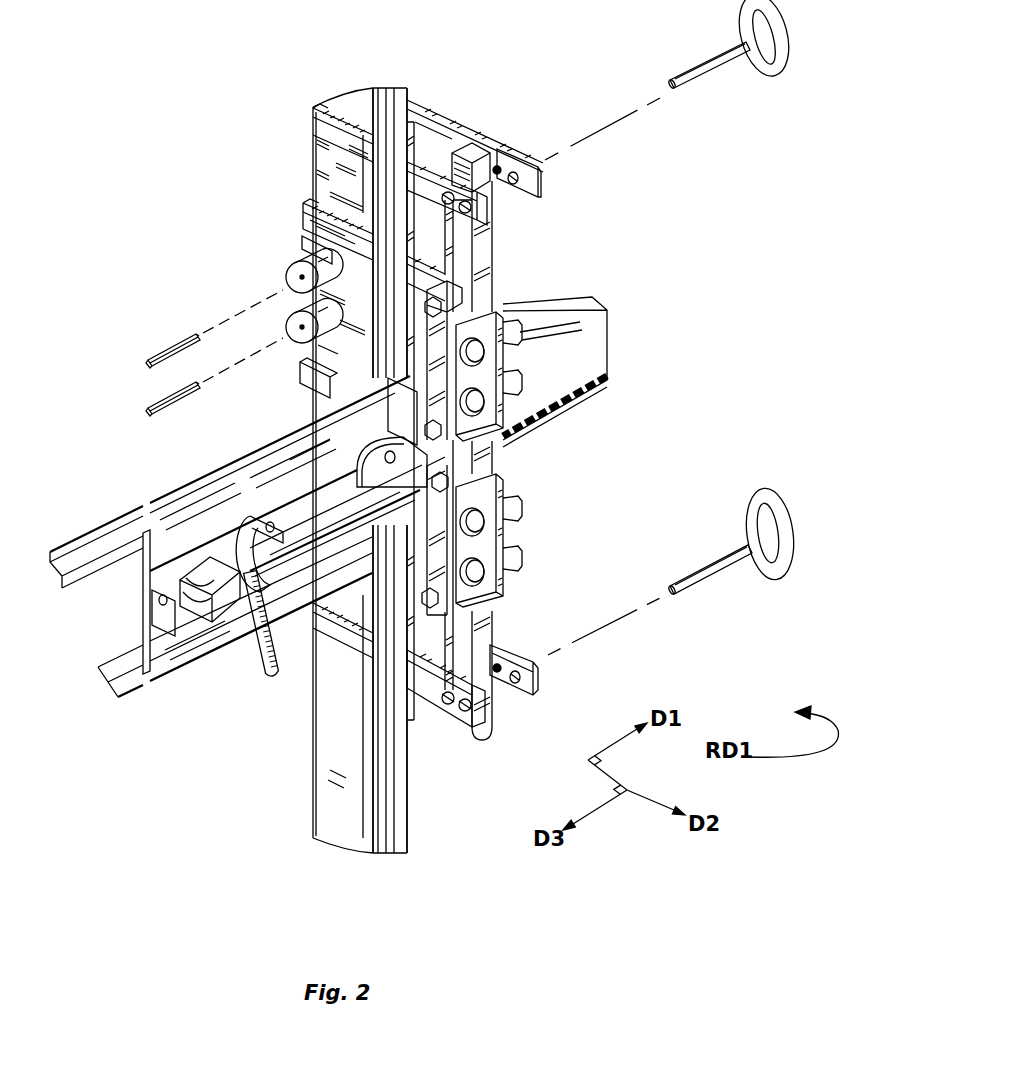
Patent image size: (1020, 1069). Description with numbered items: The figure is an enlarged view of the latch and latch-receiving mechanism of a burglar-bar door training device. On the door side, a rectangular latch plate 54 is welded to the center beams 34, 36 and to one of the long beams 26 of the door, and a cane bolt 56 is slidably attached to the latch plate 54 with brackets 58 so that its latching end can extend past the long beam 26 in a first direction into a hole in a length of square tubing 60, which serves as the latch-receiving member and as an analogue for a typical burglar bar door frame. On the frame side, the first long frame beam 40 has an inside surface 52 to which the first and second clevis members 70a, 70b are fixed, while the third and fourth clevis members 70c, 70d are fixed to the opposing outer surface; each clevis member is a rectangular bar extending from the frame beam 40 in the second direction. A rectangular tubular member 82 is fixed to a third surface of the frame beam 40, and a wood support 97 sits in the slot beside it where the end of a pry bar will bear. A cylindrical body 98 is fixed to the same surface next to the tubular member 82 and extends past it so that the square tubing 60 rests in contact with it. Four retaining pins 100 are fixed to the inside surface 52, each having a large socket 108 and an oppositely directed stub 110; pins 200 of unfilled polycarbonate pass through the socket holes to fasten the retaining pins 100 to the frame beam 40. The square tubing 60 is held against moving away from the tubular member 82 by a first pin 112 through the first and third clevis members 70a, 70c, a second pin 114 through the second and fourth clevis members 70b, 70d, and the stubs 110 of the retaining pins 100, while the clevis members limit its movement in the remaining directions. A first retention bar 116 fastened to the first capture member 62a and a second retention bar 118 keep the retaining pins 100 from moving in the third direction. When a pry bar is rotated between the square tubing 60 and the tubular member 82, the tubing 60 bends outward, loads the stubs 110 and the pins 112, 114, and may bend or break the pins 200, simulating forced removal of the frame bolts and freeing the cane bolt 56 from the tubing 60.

The long beam 26 is at (390, 85).
The first long frame beam 40 is at (335, 496).
The inside surface 52 is at (352, 762).
The first clevis member 70a is at (342, 115).
The second clevis member 70b is at (345, 637).
The third clevis member 70c is at (443, 112).
The fourth clevis member 70d is at (527, 657).
The first capture member 62a is at (310, 202).
The retaining pin 100 is at (302, 242).
The socket 108 is at (297, 275).
The pin 200 is at (160, 357).
The rectangular tubular member 82 is at (438, 246).
The square tubing 60 is at (485, 262).
The stub 110 is at (515, 327).
The wood support 97 is at (598, 355).
The first retention bar 116 is at (437, 388).
The second retention bar 118 is at (427, 505).
The bracket 58 is at (207, 555).
The center beam 34 is at (80, 540).
The center beam 36 is at (118, 700).
The latch plate 54 is at (142, 560).
The cane bolt 56 is at (260, 662).
The cylindrical body 98 is at (450, 717).
The first pin 112 is at (722, 60).
The second pin 114 is at (723, 560).